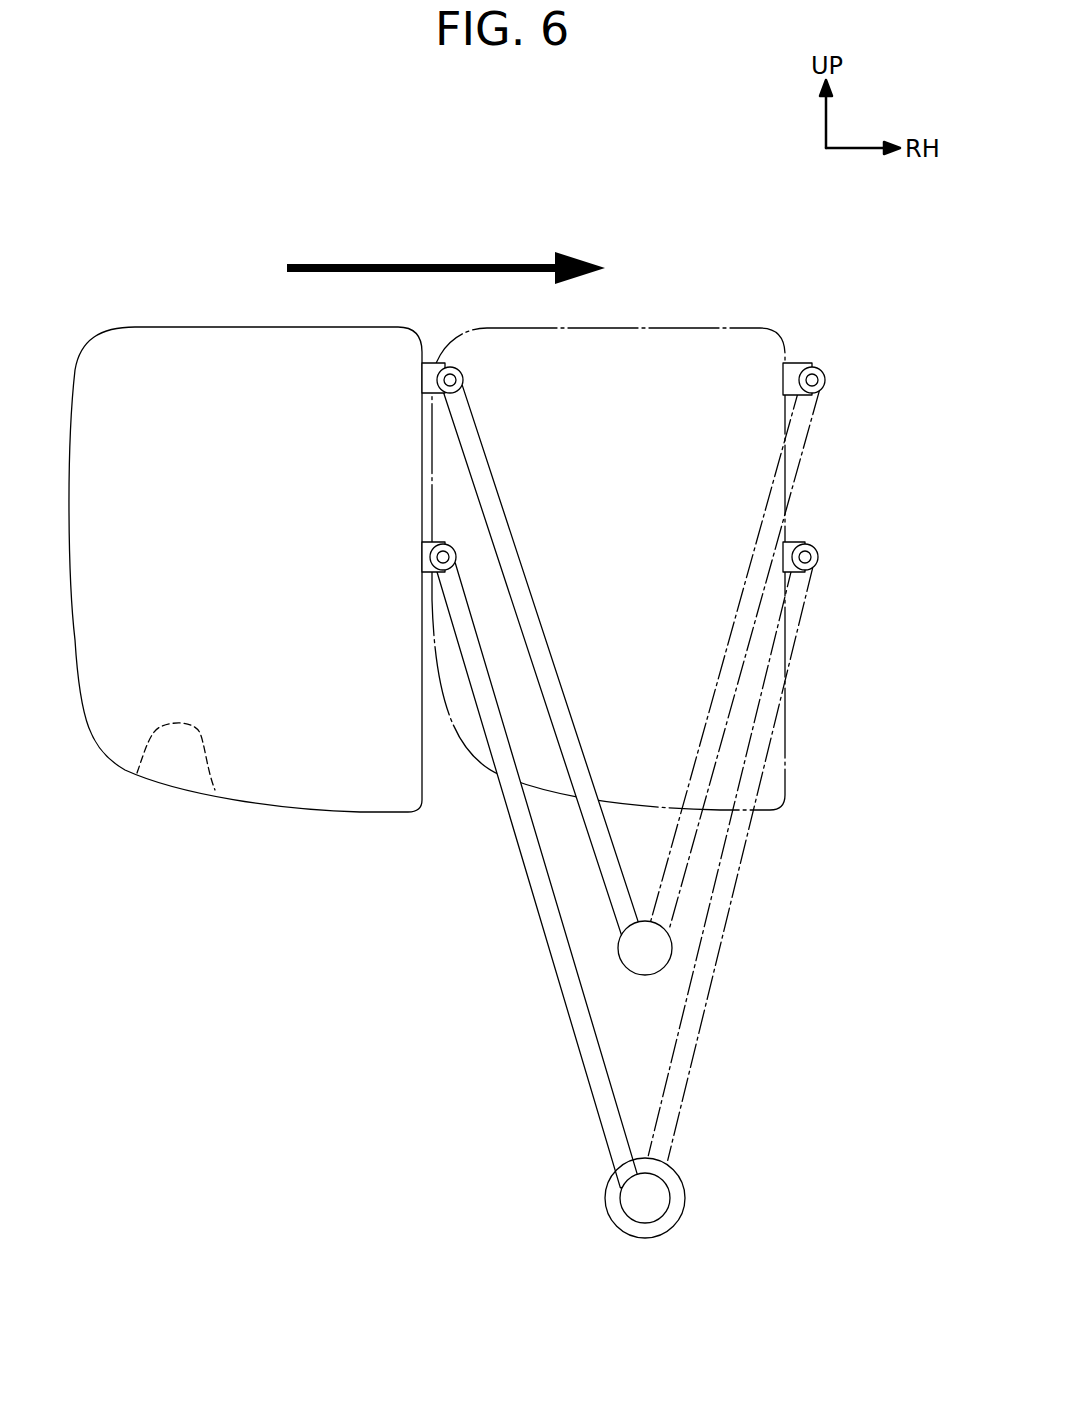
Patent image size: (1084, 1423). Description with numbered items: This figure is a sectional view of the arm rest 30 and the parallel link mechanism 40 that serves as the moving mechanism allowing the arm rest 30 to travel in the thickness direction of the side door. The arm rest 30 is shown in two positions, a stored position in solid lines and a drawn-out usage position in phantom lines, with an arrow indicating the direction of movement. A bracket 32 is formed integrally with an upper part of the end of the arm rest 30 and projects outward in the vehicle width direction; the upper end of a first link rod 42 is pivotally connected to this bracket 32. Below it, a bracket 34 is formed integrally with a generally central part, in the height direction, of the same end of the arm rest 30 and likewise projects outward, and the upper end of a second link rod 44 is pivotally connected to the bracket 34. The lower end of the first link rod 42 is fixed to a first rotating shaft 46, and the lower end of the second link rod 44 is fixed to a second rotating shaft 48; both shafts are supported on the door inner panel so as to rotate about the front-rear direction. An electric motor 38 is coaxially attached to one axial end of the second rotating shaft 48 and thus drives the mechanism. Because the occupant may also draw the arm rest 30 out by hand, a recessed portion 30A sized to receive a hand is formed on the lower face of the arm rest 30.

The arm rest 30 is at (95, 337).
The recessed portion 30A is at (203, 763).
The bracket 32 is at (433, 362).
The bracket 34 is at (430, 548).
The electric motor 38 is at (605, 1198).
The parallel link mechanism 40 is at (700, 1148).
The first link rod 42 is at (542, 610).
The second link rod 44 is at (578, 1046).
The first rotating shaft 46 is at (645, 976).
The second rotating shaft 48 is at (658, 1223).